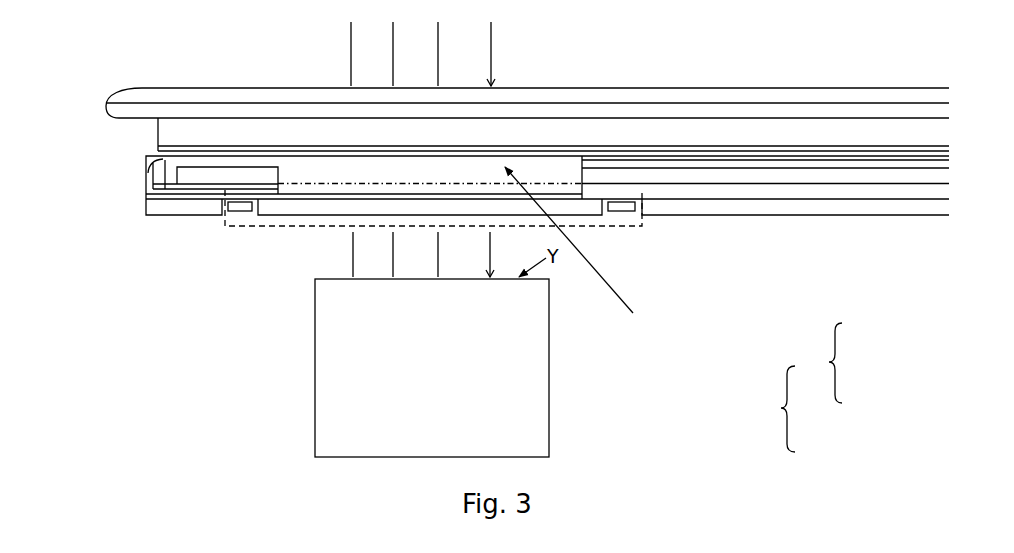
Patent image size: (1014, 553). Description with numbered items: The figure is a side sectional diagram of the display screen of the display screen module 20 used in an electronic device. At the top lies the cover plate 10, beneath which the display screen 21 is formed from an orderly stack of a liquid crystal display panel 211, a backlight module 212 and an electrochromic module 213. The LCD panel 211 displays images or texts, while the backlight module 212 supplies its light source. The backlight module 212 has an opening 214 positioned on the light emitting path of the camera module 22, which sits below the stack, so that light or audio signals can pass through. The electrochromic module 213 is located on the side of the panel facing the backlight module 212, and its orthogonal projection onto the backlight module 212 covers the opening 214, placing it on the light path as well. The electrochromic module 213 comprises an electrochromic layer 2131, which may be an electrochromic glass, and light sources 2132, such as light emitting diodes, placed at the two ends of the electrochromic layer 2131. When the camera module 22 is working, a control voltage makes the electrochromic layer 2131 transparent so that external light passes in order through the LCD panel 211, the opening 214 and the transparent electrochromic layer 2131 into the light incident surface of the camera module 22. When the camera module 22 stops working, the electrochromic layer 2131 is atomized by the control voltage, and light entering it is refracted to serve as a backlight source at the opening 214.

The cover plate 10 is at (123, 98).
The display screen module 20 is at (815, 390).
The display screen 21 is at (845, 362).
The liquid crystal display panel 211 is at (158, 140).
The backlight module 212 is at (150, 187).
The electrochromic module 213 is at (298, 225).
The electrochromic layer 2131 is at (580, 209).
The light sources 2132 is at (246, 205).
The opening 214 is at (577, 253).
The camera module 22 is at (323, 392).